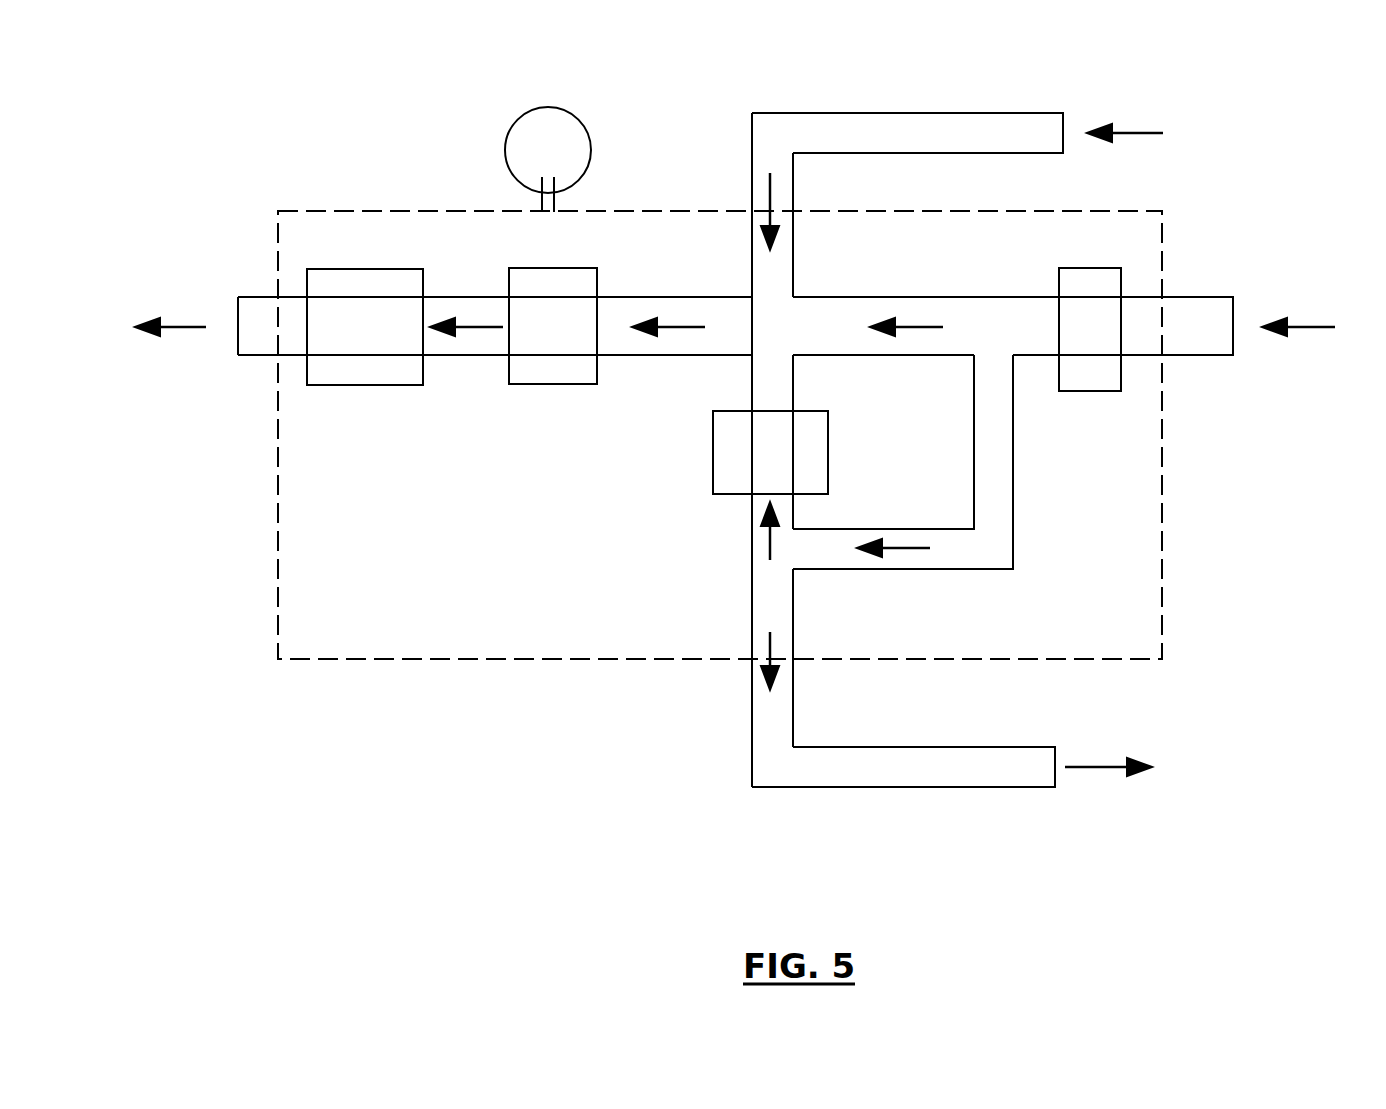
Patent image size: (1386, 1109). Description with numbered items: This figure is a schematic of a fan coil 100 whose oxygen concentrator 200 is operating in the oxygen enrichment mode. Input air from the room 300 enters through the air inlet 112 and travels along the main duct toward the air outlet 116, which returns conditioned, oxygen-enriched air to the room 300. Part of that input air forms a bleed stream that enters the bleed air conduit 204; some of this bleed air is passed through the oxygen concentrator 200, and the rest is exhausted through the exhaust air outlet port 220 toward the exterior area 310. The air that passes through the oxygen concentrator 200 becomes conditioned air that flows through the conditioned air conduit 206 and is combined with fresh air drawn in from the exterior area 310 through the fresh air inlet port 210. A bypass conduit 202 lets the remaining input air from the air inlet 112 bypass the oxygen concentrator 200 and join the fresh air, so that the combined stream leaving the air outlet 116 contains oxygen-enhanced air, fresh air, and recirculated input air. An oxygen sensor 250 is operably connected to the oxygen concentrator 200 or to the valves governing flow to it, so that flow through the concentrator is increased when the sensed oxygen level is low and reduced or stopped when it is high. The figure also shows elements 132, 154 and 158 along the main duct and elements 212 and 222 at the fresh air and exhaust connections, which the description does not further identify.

The fan coil 100 is at (322, 116).
The air inlet 112 is at (1162, 297).
The air outlet 116 is at (278, 297).
The first component 132 is at (1087, 383).
The second component 154 is at (507, 384).
The third component 158 is at (357, 385).
The oxygen concentrator 200 is at (713, 477).
The bypass conduit 202 is at (857, 297).
The bleed air conduit 204 is at (1000, 557).
The conditioned air conduit 206 is at (752, 383).
The fresh air inlet port 210 is at (762, 214).
The inlet pipe 212 is at (795, 113).
The exhaust air outlet port 220 is at (793, 660).
The outlet pipe 222 is at (923, 788).
The oxygen sensor 250 is at (548, 108).
The room 300 is at (215, 395).
The exterior area 310 is at (1183, 119).